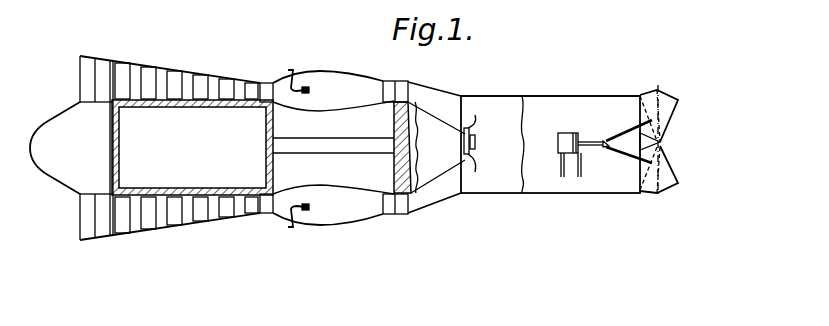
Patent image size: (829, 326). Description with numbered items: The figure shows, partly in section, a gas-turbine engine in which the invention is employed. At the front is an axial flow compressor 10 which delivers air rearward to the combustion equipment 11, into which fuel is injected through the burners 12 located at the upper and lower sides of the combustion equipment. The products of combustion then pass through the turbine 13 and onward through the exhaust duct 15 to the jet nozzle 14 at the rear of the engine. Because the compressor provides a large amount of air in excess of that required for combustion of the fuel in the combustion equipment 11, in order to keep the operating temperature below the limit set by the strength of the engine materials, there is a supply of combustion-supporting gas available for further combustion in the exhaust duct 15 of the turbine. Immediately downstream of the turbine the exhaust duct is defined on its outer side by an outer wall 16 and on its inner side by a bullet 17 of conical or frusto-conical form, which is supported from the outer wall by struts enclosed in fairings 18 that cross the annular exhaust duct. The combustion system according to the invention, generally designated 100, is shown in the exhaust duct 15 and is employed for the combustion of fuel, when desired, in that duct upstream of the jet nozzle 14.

The axial flow compressor 10 is at (184, 72).
The combustion equipment 11 is at (338, 78).
The burners 12 is at (292, 69).
The turbine 13 is at (409, 84).
The jet nozzle 14 is at (655, 108).
The exhaust duct 15 is at (485, 183).
The outer wall 16 is at (428, 207).
The bullet 17 is at (430, 160).
The fairings 18 is at (447, 102).
The combustion system 100 is at (478, 147).